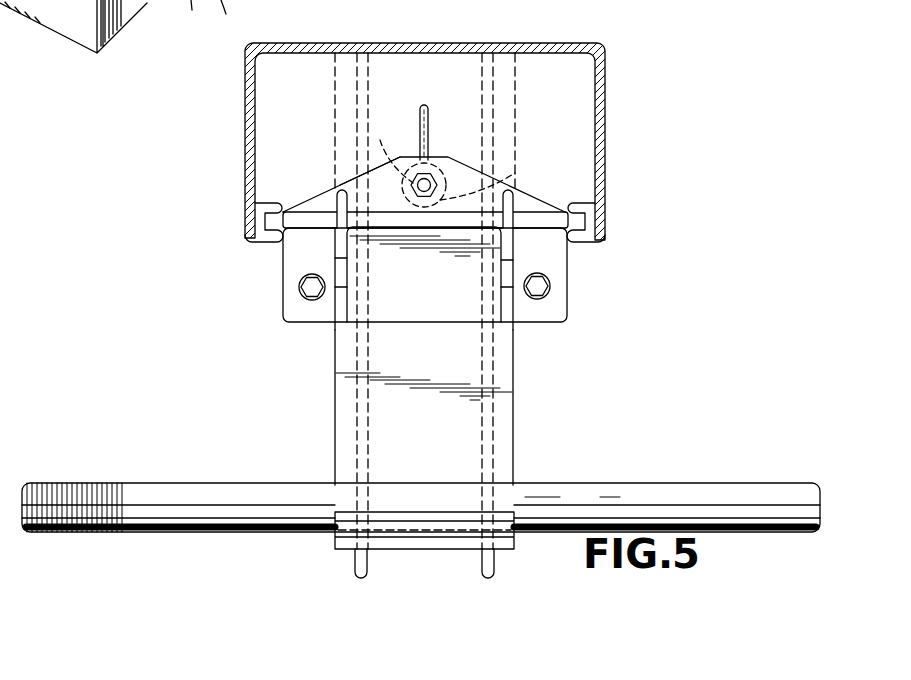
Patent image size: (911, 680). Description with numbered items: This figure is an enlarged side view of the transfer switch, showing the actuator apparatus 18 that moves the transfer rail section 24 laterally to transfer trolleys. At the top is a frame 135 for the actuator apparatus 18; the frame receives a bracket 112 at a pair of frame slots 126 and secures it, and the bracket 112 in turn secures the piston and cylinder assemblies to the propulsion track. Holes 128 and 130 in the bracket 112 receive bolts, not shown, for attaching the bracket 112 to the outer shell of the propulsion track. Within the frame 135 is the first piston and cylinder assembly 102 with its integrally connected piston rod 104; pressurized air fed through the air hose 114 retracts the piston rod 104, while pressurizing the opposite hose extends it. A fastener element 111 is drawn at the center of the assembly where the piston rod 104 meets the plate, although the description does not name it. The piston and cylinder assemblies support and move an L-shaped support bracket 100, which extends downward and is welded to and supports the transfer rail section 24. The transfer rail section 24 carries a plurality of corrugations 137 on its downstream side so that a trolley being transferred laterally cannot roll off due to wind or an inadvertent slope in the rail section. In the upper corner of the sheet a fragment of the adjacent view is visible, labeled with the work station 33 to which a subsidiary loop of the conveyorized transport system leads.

The frame 135 is at (481, 43).
The air hose 114 is at (430, 132).
The piston rod 104 is at (398, 158).
The nut 111 is at (447, 161).
The first piston and cylinder assembly 102 is at (515, 173).
The bracket 112 is at (306, 201).
The frame slots 126 is at (268, 250).
The hole 128 is at (542, 283).
The hole 130 is at (300, 287).
The actuator apparatus 18 is at (574, 317).
The L-shaped support bracket 100 is at (337, 413).
The transfer rail section 24 is at (690, 492).
The corrugations 137 is at (166, 523).
The work station 33 is at (147, 0).